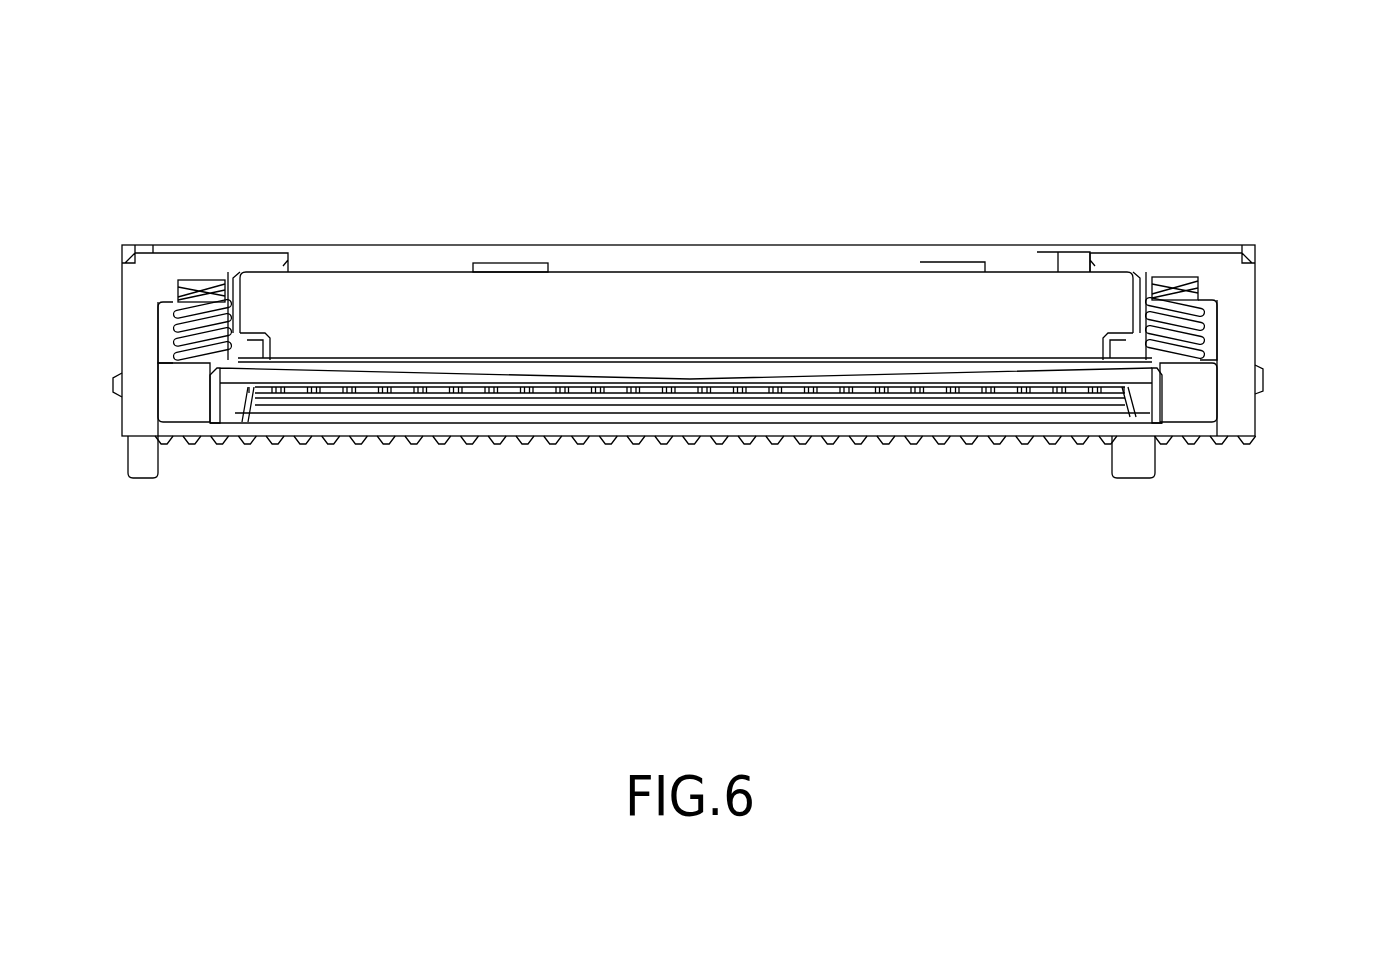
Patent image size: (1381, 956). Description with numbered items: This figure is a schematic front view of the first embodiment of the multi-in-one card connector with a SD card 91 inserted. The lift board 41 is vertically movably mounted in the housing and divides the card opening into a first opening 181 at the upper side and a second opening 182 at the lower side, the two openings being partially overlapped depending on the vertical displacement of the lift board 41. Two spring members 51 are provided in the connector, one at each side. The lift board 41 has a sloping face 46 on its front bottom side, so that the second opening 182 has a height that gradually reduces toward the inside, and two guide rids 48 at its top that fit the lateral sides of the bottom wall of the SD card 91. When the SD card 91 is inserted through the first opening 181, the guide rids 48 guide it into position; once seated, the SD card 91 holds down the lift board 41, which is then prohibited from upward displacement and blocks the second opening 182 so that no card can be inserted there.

The lift board 41 is at (768, 368).
The sloping face 46 is at (968, 375).
The guide rids 48 is at (237, 352).
The spring members 51 is at (193, 330).
The SD card 91 is at (733, 270).
The first opening 181 is at (512, 267).
The second opening 182 is at (513, 413).